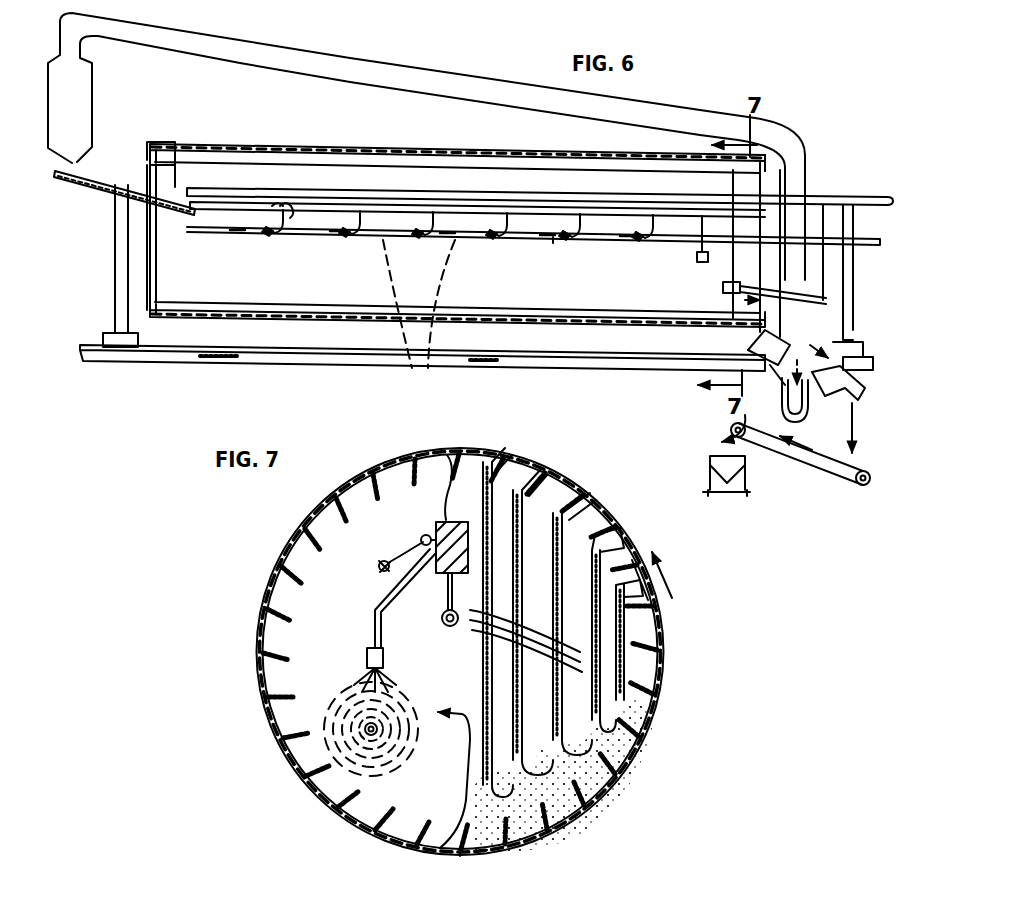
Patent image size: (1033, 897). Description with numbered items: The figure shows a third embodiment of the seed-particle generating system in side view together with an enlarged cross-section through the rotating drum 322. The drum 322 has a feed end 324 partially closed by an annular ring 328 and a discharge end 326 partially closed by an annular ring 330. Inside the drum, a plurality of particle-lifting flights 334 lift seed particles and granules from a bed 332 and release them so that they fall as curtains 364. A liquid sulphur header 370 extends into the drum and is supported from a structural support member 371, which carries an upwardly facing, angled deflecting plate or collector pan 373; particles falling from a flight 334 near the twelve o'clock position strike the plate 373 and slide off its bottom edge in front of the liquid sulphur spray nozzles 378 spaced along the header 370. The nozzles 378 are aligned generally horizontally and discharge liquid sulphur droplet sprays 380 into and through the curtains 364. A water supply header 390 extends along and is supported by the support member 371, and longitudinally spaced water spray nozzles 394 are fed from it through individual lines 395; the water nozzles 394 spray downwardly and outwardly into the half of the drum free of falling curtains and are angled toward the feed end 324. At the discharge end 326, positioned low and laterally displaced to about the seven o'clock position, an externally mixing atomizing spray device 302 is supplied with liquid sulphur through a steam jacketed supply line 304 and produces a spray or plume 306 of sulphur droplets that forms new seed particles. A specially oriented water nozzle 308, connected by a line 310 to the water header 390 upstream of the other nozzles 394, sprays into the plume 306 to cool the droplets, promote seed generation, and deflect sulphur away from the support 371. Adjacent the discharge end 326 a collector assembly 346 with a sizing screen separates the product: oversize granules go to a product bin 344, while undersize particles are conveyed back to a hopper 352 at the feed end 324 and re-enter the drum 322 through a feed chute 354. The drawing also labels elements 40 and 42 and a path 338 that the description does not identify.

In FIG. 6, the hopper 352 is at (95, 107).
In FIG. 6, the annular ring 328 is at (149, 146).
In FIG. 6, the water spray nozzles 394 is at (282, 212).
In FIG. 7, the water spray nozzles 394 is at (379, 566).
In FIG. 6, the individual lines 395 is at (277, 206).
In FIG. 7, the individual lines 395 is at (402, 548).
In FIG. 6, the water supply header 390 is at (318, 205).
In FIG. 7, the water supply header 390 is at (421, 537).
In FIG. 6, the rotating drum 322 is at (393, 143).
In FIG. 7, the rotating drum 322 is at (521, 448).
In FIG. 6, the particle-lifting flights 334 is at (478, 153).
In FIG. 7, the particle-lifting flights 334 is at (605, 545).
In FIG. 6, the line 310 is at (690, 175).
In FIG. 6, the annular ring 330 is at (767, 172).
In FIG. 6, the structural support member 371 is at (828, 197).
In FIG. 7, the structural support member 371 is at (422, 523).
In FIG. 6, the feed chute 354 is at (59, 183).
In FIG. 6, the feed end 324 is at (158, 278).
In FIG. 6, the steam jacketed supply line 304 is at (830, 276).
In FIG. 7, the steam jacketed supply line 304 is at (382, 598).
In FIG. 6, the discharge end 326 is at (842, 300).
In FIG. 6, the deflector plate 42 is at (845, 330).
In FIG. 6, the outlet block 40 is at (866, 349).
In FIG. 6, the collector assembly 346 is at (797, 399).
In FIG. 6, the product bin 344 is at (703, 462).
In FIG. 6, the liquid sulphur spray nozzles 378 is at (415, 362).
In FIG. 7, the liquid sulphur spray nozzles 378 is at (472, 705).
In FIG. 6, the dashed material path 338 is at (434, 363).
In FIG. 6, the liquid sulphur header 370 is at (553, 243).
In FIG. 7, the liquid sulphur header 370 is at (447, 455).
In FIG. 6, the water nozzle 308 is at (703, 262).
In FIG. 7, the water nozzle 308 is at (367, 657).
In FIG. 6, the seed generating spray device 302 is at (700, 384).
In FIG. 7, the seed generating spray device 302 is at (363, 729).
In FIG. 7, the curtains 364 is at (528, 600).
In FIG. 7, the angled deflecting plate 373 is at (395, 466).
In FIG. 7, the liquid sulphur droplet sprays 380 is at (622, 643).
In FIG. 7, the bed 332 is at (538, 754).
In FIG. 7, the plume 306 is at (457, 856).